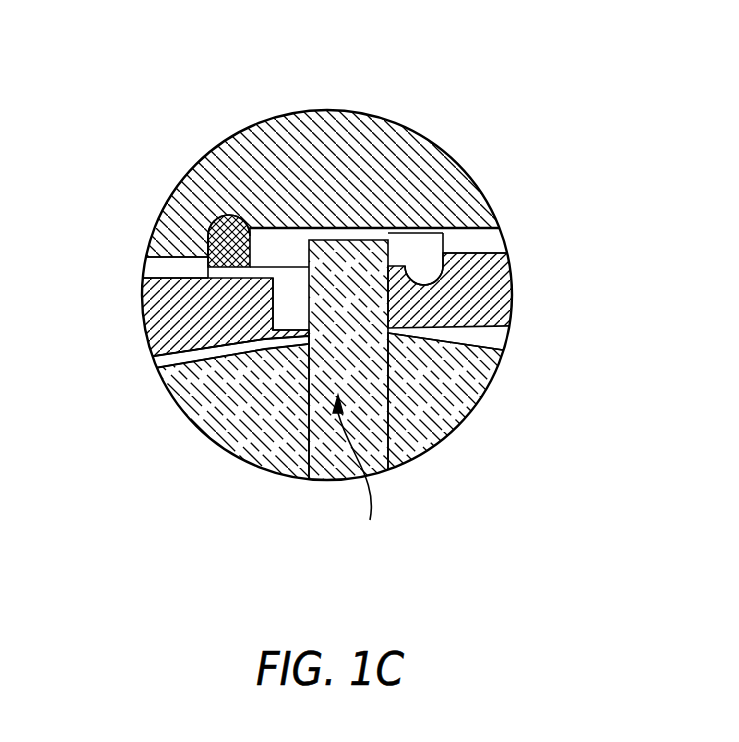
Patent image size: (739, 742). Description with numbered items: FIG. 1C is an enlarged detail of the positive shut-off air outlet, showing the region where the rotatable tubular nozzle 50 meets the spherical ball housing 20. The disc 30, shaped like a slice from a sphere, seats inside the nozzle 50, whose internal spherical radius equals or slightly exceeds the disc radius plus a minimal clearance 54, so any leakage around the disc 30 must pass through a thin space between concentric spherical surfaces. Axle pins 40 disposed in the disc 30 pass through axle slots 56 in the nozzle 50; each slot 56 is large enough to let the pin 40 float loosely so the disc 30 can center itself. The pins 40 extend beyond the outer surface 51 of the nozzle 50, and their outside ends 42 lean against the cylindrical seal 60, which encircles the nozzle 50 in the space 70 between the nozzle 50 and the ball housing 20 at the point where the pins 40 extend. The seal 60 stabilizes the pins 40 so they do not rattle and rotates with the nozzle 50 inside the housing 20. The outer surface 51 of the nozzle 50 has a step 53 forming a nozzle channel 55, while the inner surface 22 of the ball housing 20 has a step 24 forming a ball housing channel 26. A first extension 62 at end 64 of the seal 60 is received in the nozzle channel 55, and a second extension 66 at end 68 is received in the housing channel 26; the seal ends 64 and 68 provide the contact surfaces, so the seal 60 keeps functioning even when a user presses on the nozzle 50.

The spherical ball housing 20 is at (318, 110).
The inner surface of ball housing 22 is at (148, 263).
The step 24 is at (205, 257).
The ball housing channel 26 is at (237, 217).
The disc 30 is at (158, 380).
The axle pins 40 is at (358, 475).
The outside ends of pins 42 is at (437, 230).
The rotatable tubular nozzle 50 is at (148, 350).
The outer surface of nozzle 51 is at (443, 238).
The step 53 is at (447, 262).
The minimal clearance 54 is at (213, 347).
The nozzle channel 55 is at (432, 320).
The axle slots 56 is at (295, 315).
The cylindrical seal 60 is at (287, 237).
The first extension 62 is at (445, 278).
The end of seal 64 is at (500, 252).
The second extension 66 is at (215, 225).
The end of seal 68 is at (150, 328).
The space 70 is at (437, 230).